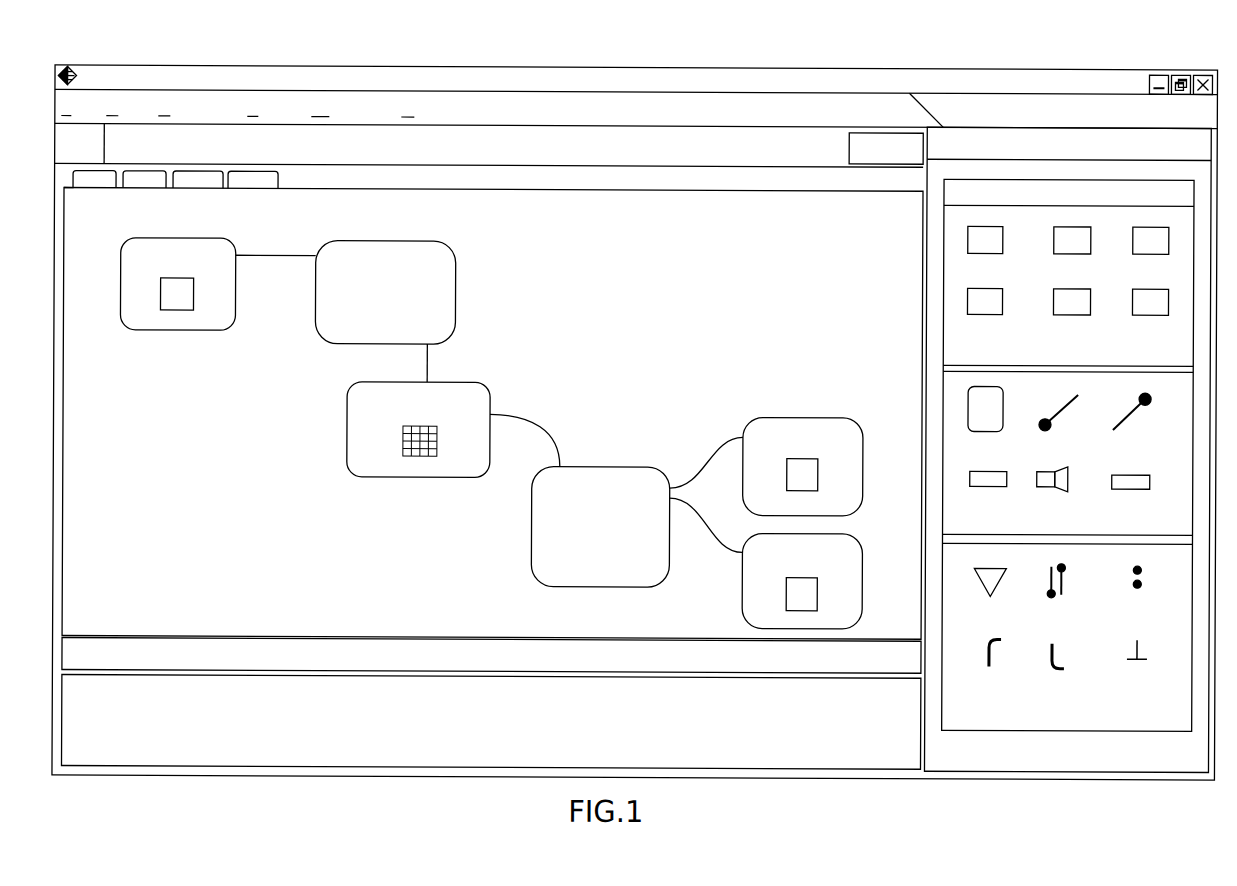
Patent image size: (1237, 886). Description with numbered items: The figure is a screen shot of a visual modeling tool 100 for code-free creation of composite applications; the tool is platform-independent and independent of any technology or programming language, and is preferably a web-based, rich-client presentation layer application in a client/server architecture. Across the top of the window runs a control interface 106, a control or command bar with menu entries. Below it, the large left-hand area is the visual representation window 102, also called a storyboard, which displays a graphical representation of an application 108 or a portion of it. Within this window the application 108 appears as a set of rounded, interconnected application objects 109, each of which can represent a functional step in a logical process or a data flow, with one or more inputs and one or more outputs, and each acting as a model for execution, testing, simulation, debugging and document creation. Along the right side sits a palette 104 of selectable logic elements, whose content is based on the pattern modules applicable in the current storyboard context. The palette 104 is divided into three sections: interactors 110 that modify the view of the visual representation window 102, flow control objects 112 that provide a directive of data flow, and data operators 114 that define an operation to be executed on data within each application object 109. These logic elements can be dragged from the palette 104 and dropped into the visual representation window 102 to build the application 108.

The visual modeling tool 100 is at (771, 49).
The visual representation window 102 is at (118, 499).
The palette 104 is at (983, 143).
The control interface 106 is at (505, 105).
The application 108 is at (717, 324).
The application object 109 is at (455, 290).
The interactors 110 is at (1168, 357).
The flow control objects 112 is at (1170, 527).
The data operators 114 is at (1170, 717).